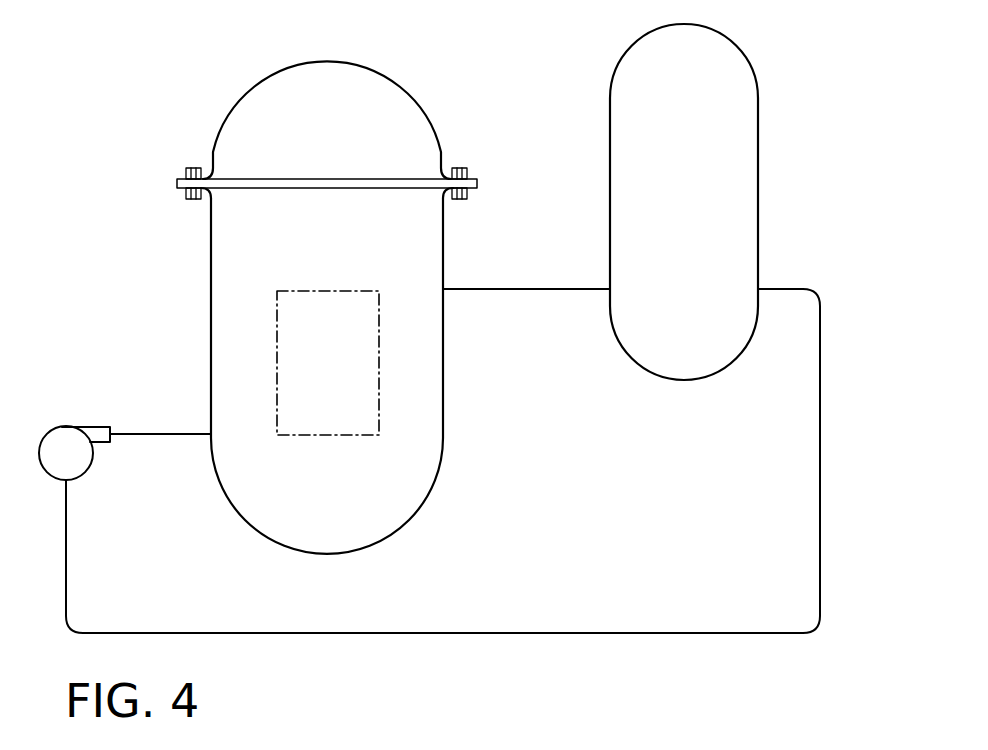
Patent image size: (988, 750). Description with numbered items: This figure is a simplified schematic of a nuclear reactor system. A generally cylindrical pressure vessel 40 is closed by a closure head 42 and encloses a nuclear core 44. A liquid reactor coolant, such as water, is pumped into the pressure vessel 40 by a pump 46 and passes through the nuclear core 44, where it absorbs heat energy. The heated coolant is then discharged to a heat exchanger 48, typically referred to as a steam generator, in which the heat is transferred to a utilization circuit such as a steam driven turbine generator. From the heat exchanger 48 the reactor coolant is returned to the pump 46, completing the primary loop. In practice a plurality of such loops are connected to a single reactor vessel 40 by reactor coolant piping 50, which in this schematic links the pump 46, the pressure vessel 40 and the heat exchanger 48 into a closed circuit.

The pressure vessel 40 is at (443, 418).
The closure head 42 is at (225, 122).
The nuclear core 44 is at (275, 349).
The pump 46 is at (62, 427).
The heat exchanger 48 is at (760, 137).
The reactor coolant piping 50 is at (822, 558).